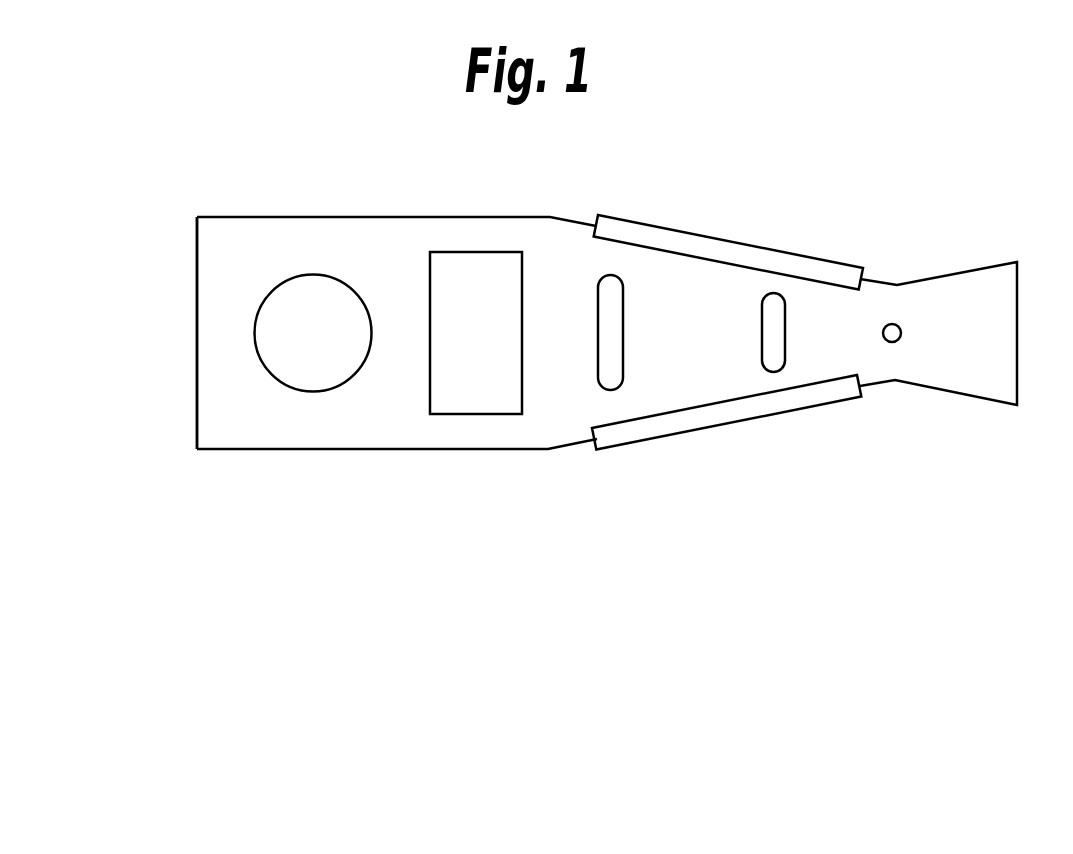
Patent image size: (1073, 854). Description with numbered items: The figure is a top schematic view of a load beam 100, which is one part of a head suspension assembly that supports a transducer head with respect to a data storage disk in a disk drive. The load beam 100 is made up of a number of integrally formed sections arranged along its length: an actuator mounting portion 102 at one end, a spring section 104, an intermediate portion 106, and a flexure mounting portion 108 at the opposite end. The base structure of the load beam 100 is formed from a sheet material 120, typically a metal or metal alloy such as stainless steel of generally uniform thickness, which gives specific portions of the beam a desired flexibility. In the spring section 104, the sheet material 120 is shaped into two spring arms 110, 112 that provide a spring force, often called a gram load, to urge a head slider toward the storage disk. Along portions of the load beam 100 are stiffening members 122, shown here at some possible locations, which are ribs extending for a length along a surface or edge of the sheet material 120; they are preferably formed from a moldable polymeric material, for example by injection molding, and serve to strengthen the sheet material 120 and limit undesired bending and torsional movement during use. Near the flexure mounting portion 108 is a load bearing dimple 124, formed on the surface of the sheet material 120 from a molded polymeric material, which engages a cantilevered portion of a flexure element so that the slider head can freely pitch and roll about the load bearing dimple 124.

The load beam 100 is at (694, 124).
The actuator mounting portion 102 is at (243, 201).
The spring section 104 is at (447, 493).
The intermediate portion 106 is at (738, 444).
The flexure mounting portion 108 is at (959, 254).
The spring arm 110 is at (485, 215).
The spring arm 112 is at (473, 432).
The sheet material 120 is at (240, 438).
The stiffening member 122 is at (767, 305).
The load bearing dimple 124 is at (888, 343).